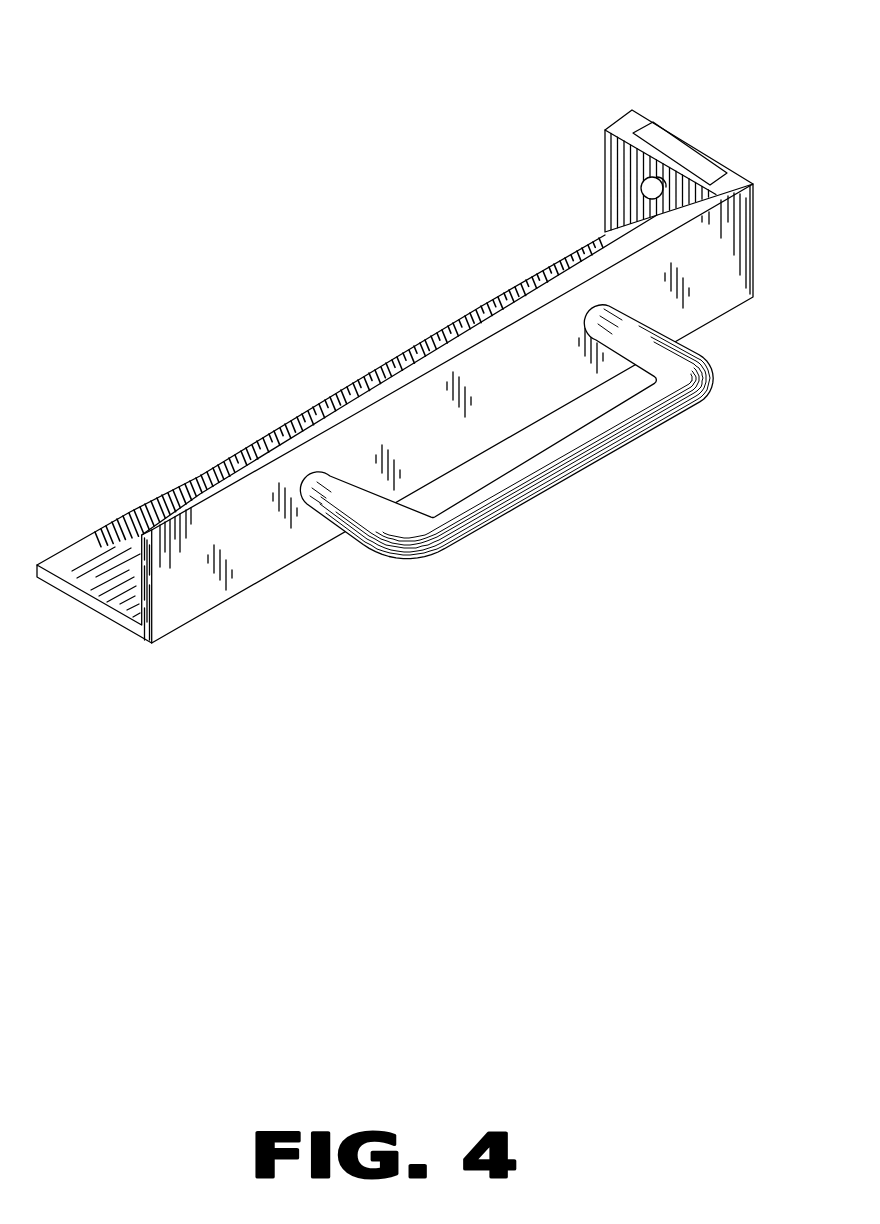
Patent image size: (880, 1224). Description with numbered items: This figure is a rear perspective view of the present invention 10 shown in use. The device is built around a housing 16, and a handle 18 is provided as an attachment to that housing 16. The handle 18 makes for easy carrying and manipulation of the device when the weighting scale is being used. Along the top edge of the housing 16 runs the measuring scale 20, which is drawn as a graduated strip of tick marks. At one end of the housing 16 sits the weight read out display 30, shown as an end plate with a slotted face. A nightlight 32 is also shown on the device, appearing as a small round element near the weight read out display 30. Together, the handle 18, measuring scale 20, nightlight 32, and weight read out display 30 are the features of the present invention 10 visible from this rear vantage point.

The present invention 10 is at (714, 128).
The housing 16 is at (228, 604).
The handle 18 is at (597, 467).
The measuring scale 20 is at (337, 390).
The weight read out display 30 is at (652, 135).
The nightlight 32 is at (647, 190).